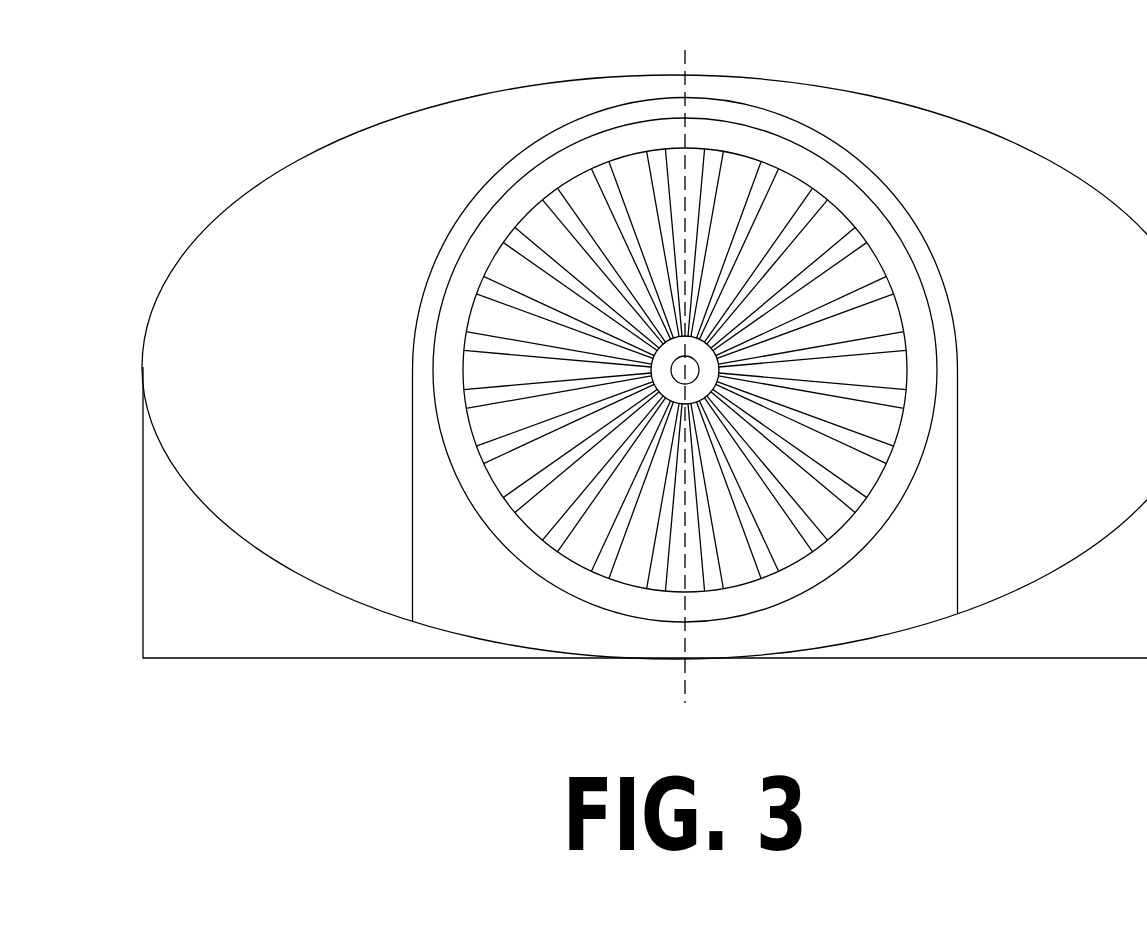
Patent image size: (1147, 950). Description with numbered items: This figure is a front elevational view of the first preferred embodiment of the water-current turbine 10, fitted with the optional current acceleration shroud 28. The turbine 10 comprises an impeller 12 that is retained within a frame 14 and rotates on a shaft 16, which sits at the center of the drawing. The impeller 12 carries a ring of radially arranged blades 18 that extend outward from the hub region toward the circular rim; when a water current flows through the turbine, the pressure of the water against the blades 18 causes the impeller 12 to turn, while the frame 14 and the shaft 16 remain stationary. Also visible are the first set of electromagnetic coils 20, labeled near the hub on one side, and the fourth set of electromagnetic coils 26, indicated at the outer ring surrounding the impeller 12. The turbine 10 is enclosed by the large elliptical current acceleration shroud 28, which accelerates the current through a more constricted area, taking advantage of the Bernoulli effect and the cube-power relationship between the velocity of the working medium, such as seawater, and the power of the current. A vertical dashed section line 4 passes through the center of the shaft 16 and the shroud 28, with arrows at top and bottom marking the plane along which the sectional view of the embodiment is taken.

The section line 4- 4 is at (664, 703).
The turbine 10 is at (860, 160).
The impeller 12 is at (865, 230).
The frame 14 is at (958, 360).
The shaft 16 is at (719, 371).
The blades 18 is at (607, 200).
The first set of electromagnetic coils 20 is at (651, 368).
The fourth set of electromagnetic coils 26 is at (477, 193).
The current acceleration shroud 28 is at (254, 189).